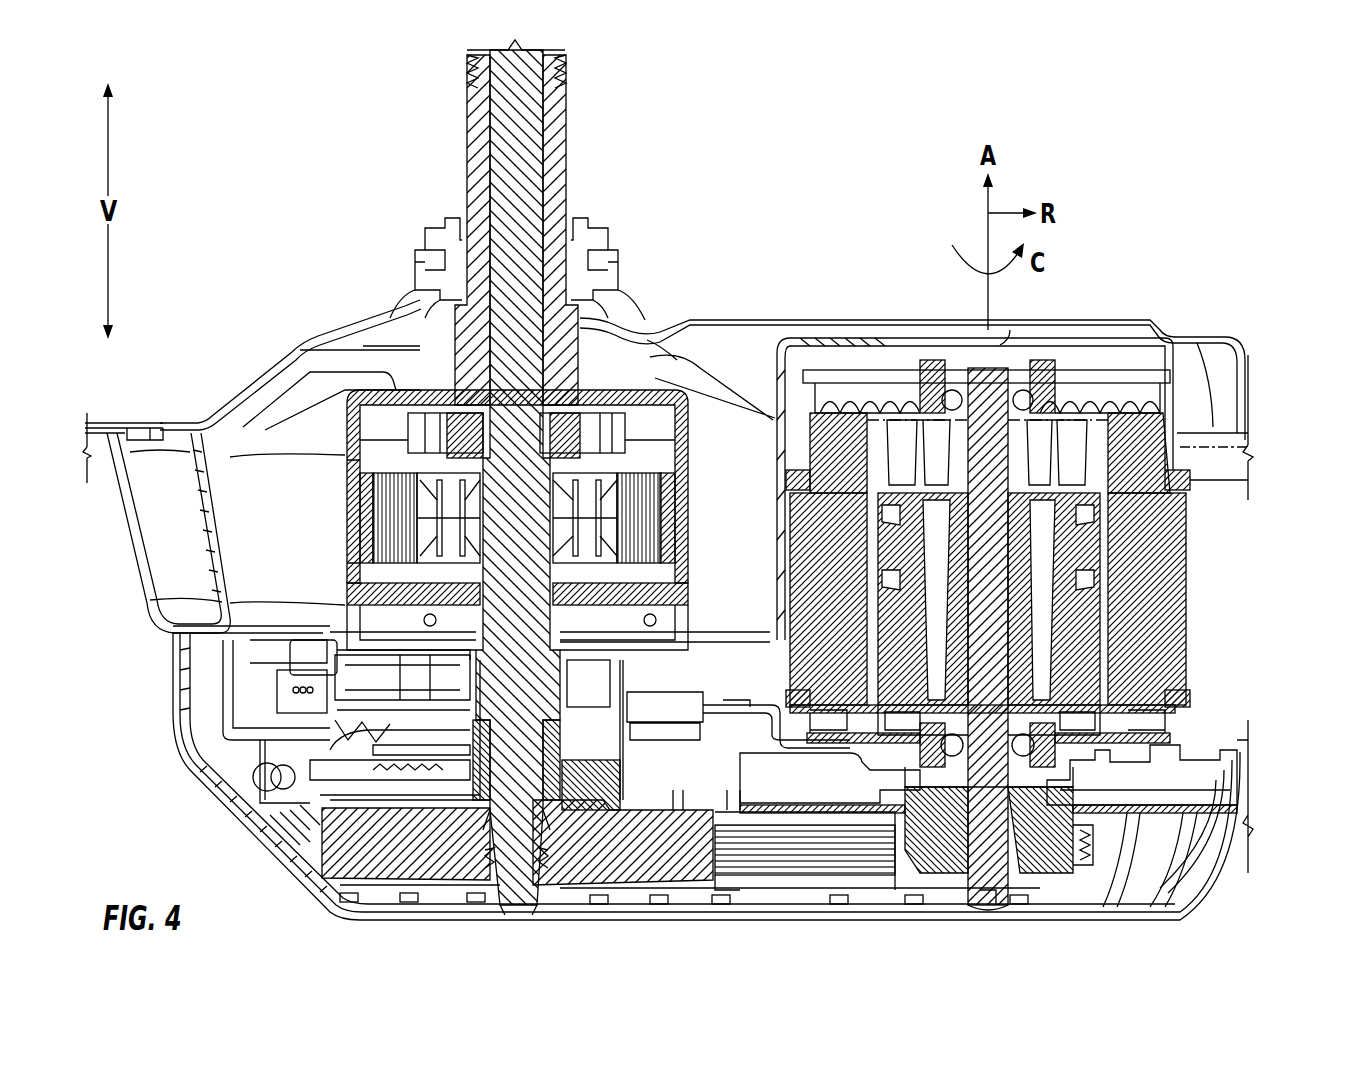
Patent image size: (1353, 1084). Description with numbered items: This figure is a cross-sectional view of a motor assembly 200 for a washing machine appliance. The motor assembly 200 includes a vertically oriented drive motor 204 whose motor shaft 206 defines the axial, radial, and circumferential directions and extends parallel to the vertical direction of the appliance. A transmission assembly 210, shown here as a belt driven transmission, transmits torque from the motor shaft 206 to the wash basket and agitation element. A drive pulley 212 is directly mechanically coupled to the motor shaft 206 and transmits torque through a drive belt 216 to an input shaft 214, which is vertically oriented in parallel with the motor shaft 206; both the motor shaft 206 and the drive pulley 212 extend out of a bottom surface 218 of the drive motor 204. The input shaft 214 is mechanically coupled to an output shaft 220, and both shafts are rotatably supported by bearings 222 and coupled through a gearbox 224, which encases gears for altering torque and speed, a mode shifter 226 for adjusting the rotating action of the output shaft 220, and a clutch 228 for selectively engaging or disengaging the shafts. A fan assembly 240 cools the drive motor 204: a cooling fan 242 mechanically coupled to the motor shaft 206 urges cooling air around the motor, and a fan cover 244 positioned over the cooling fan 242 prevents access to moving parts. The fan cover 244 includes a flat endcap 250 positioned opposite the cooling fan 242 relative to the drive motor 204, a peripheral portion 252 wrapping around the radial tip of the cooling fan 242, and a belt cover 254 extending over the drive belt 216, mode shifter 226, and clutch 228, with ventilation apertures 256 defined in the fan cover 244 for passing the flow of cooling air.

The motor assembly 200 is at (862, 100).
The drive motor 204 is at (1162, 569).
The motor shaft 206 is at (990, 660).
The transmission assembly 210 is at (256, 577).
The drive pulley 212 is at (1076, 847).
The input shaft 214 is at (520, 792).
The drive belt 216 is at (785, 855).
The bottom surface 218 is at (927, 777).
The output shaft 220 is at (522, 110).
The bearings 222 is at (675, 250).
The gearbox 224 is at (435, 498).
The mode shifter 226 is at (283, 690).
The clutch 228 is at (438, 823).
The fan assembly 240 is at (1200, 847).
The cooling fan 242 is at (1212, 789).
The fan cover 244 is at (1240, 878).
The endcap 250 is at (990, 918).
The peripheral portion 252 is at (1242, 855).
The belt cover 254 is at (587, 905).
The ventilation apertures 256 is at (1128, 862).